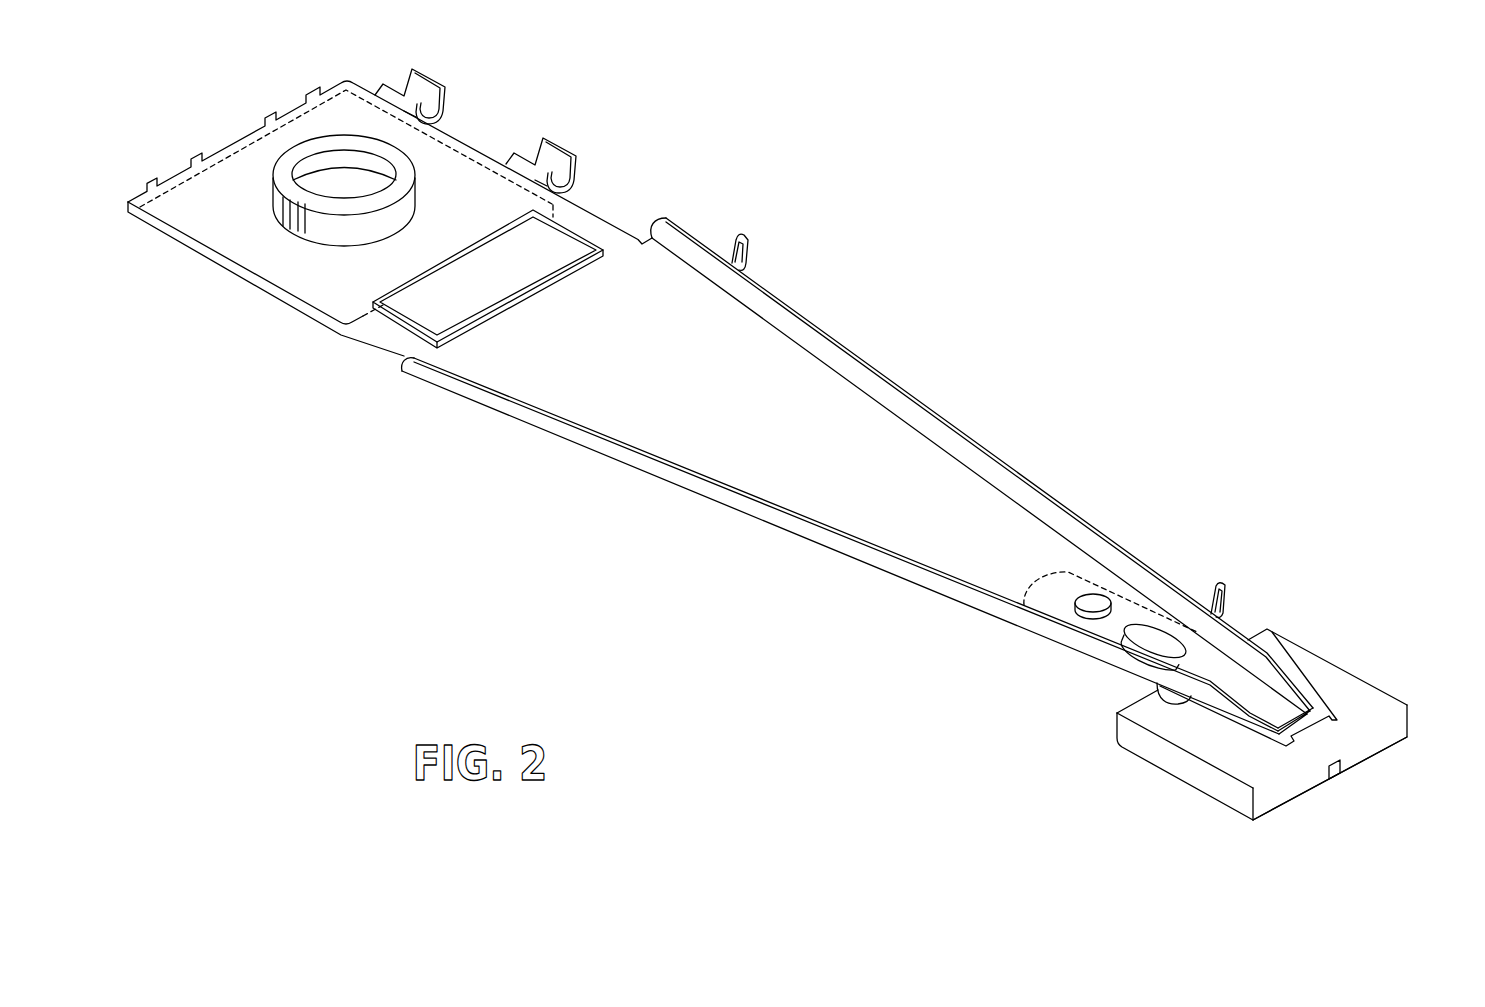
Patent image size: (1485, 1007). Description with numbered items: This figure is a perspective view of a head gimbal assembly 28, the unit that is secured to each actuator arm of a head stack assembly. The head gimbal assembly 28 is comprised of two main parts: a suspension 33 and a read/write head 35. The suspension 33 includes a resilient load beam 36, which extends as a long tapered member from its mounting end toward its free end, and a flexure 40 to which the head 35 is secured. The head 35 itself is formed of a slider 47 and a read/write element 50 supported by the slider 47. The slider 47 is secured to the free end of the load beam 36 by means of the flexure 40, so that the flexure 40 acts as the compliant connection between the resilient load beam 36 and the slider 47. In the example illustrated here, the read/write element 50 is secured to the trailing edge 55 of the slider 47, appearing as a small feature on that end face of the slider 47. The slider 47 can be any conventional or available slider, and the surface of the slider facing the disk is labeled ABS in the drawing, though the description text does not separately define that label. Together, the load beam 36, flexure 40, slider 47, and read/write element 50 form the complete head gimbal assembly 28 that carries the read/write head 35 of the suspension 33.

The head gimbal assembly 28 is at (906, 208).
The load beam 36 is at (877, 440).
The suspension 33 is at (1095, 497).
The read/write head 35 is at (1292, 616).
The slider 47 is at (1325, 662).
The trailing edge 55 is at (1407, 737).
The read/write element 50 is at (1335, 777).
The flexure 40 is at (1150, 692).
The air bearing surface ABS is at (1285, 806).